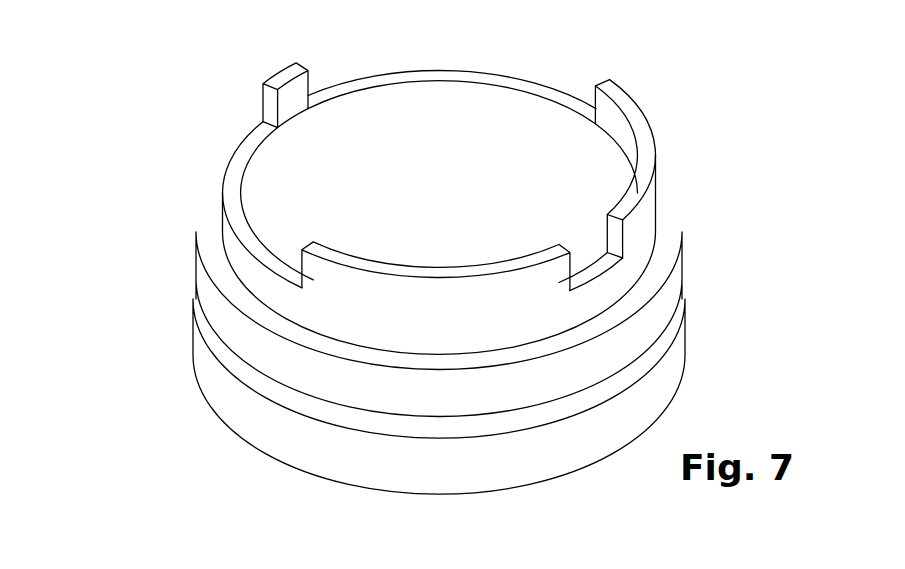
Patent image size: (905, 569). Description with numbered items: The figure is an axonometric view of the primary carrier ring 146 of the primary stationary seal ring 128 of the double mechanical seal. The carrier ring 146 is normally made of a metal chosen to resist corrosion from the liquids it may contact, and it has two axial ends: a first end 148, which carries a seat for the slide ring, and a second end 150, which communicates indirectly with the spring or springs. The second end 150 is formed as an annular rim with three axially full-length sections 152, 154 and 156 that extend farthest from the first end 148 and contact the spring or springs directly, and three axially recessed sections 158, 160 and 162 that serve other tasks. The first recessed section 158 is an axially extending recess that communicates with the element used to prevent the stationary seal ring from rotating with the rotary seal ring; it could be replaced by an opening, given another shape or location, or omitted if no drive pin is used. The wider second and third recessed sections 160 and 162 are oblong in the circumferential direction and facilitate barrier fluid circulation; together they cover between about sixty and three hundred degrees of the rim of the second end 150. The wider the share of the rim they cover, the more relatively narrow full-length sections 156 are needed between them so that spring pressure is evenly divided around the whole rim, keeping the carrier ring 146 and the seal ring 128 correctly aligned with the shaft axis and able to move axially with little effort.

The primary stationary seal ring 128 is at (152, 318).
The primary carrier ring 146 is at (497, 184).
The first end 148 is at (252, 472).
The second end 150 is at (680, 104).
The axially full-length section 152 is at (490, 319).
The axially full-length section 154 is at (645, 117).
The axially full-length section 156 is at (290, 106).
The recessed section 158 is at (593, 252).
The recessed section 160 is at (458, 73).
The recessed section 162 is at (233, 205).